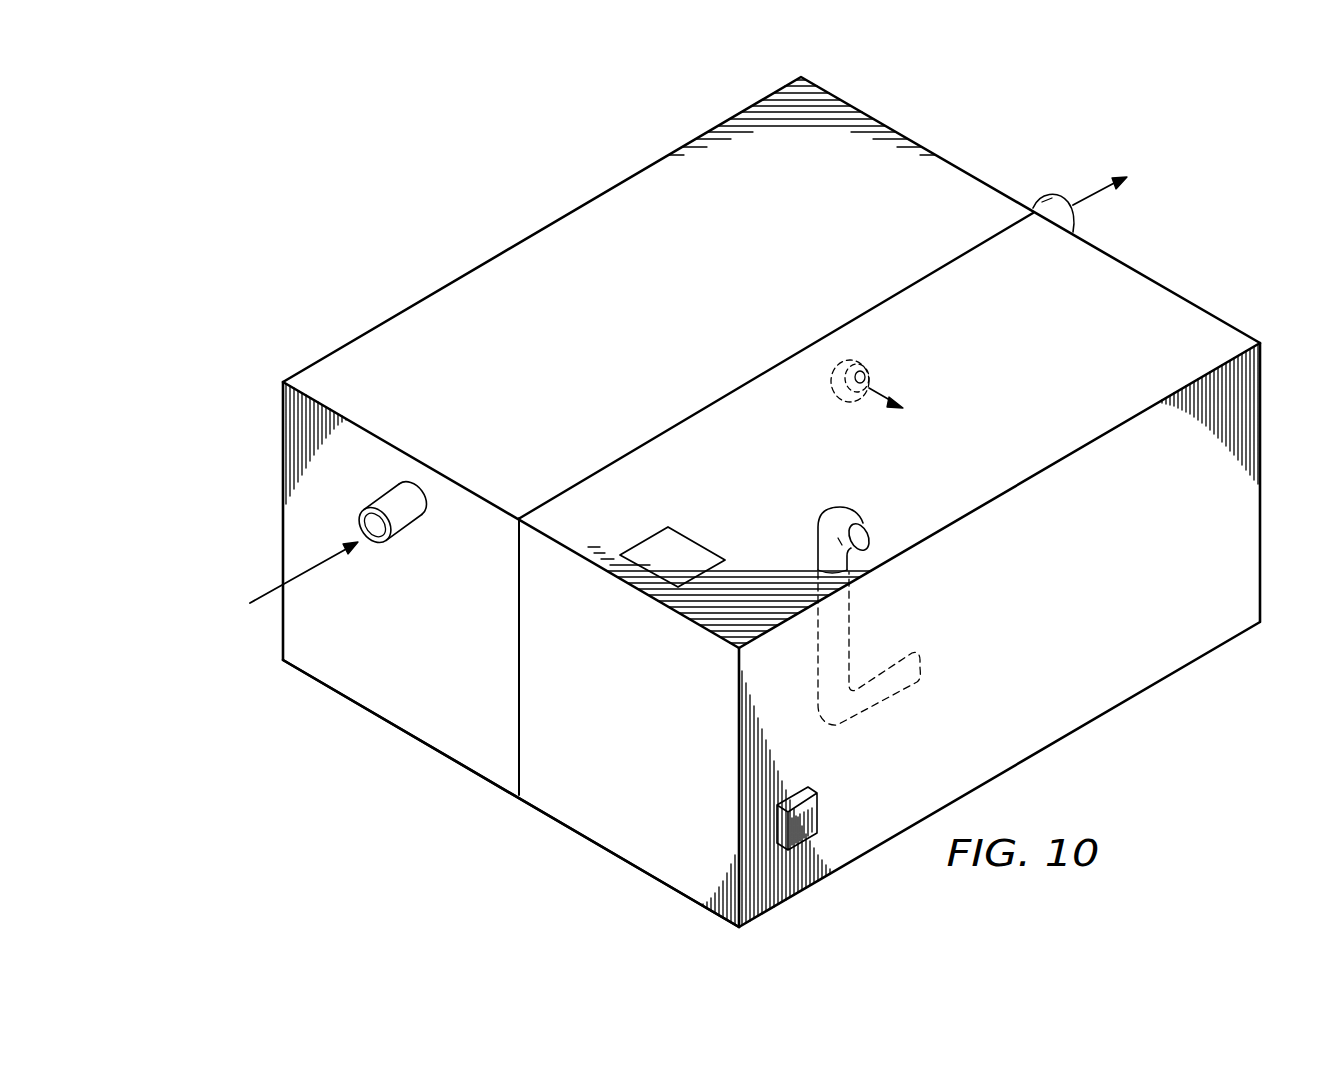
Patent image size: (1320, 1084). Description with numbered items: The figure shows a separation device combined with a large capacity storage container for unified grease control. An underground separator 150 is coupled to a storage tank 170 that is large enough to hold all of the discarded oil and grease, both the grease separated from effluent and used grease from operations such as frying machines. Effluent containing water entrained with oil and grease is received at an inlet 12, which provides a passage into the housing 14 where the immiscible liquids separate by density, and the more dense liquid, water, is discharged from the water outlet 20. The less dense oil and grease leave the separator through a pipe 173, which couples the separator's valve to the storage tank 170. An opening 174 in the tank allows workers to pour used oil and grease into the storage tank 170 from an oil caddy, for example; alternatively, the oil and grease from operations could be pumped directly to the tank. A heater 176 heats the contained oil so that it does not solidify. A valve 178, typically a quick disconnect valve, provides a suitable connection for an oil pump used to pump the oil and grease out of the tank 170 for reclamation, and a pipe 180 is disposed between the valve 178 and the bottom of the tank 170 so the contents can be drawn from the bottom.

The underground separator 150 is at (372, 231).
The housing 14 is at (541, 229).
The water outlet 20 is at (1040, 205).
The inlet 12 is at (402, 542).
The pipe 173 is at (880, 367).
The opening 174 is at (684, 552).
The valve 178 is at (858, 513).
The pipe 180 is at (872, 640).
The heater 176 is at (820, 816).
The storage tank 170 is at (627, 845).